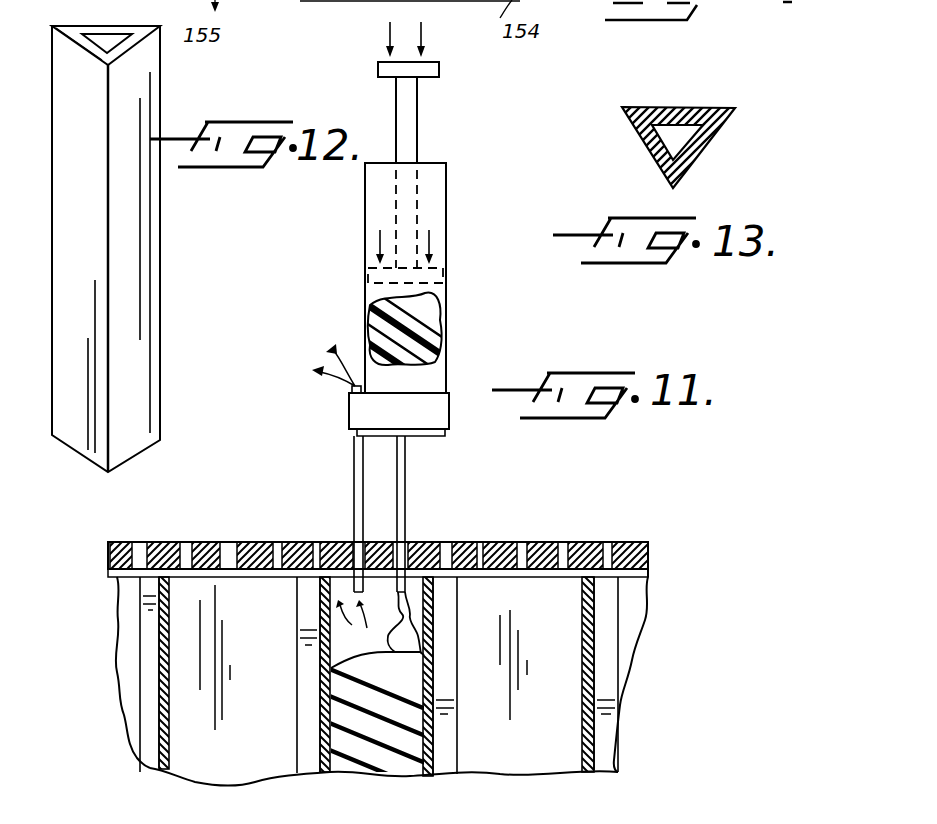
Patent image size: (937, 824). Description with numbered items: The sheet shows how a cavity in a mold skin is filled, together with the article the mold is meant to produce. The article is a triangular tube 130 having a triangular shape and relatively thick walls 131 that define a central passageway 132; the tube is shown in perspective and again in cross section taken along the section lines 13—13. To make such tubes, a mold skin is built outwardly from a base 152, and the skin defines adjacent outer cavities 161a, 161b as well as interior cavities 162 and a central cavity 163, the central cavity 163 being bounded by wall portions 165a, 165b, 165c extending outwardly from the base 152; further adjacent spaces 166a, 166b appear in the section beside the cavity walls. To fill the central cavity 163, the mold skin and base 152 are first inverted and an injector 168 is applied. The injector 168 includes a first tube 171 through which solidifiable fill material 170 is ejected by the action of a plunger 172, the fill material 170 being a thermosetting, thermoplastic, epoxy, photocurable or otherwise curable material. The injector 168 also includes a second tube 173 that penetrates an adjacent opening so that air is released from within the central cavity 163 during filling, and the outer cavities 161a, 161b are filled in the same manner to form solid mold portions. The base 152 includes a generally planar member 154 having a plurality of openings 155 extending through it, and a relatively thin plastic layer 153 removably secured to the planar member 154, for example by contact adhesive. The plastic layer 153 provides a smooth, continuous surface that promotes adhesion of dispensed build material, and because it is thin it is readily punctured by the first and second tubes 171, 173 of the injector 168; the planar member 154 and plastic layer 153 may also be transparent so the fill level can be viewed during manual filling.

In FIG. 12, the section lines 13— 13 is at (44, 248).
In FIG. 12, the triangular tube 130 is at (168, 124).
In FIG. 13, the triangular tube 130 is at (716, 98).
In FIG. 12, the probe end face 131 is at (72, 30).
In FIG. 13, the probe end face 131 is at (645, 82).
In FIG. 12, the central passageway 132 is at (112, 42).
In FIG. 11, the base 152 is at (597, 490).
In FIG. 11, the plastic layer 153 is at (650, 571).
In FIG. 11, the planar member 154 is at (637, 545).
In FIG. 11, the openings 155 is at (220, 544).
In FIG. 11, the outer cavity 161a is at (628, 657).
In FIG. 11, the outer cavity 161b is at (127, 590).
In FIG. 11, the interior cavity 162 is at (188, 686).
In FIG. 11, the central cavity 163 is at (334, 546).
In FIG. 11, the wall portion 165a is at (278, 545).
In FIG. 11, the wall portion 165b is at (458, 546).
In FIG. 11, the wall portion 165c is at (413, 588).
In FIG. 11, the channel 166a is at (607, 625).
In FIG. 11, the channel 166b is at (150, 588).
In FIG. 11, the injector 168 is at (455, 198).
In FIG. 11, the fill material 170 is at (430, 315).
In FIG. 11, the first tube 171 is at (405, 462).
In FIG. 11, the plunger 172 is at (418, 113).
In FIG. 11, the second tube 173 is at (352, 452).